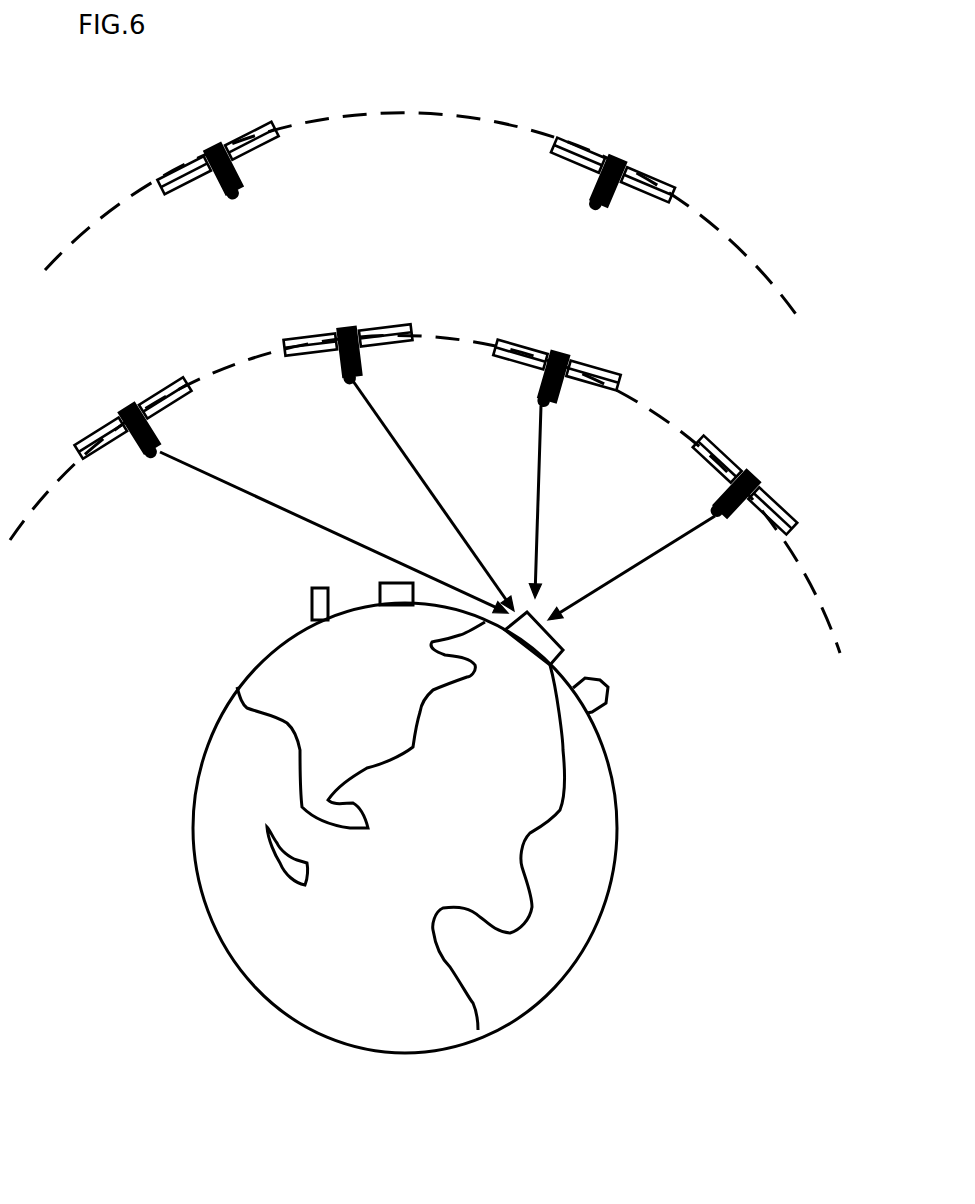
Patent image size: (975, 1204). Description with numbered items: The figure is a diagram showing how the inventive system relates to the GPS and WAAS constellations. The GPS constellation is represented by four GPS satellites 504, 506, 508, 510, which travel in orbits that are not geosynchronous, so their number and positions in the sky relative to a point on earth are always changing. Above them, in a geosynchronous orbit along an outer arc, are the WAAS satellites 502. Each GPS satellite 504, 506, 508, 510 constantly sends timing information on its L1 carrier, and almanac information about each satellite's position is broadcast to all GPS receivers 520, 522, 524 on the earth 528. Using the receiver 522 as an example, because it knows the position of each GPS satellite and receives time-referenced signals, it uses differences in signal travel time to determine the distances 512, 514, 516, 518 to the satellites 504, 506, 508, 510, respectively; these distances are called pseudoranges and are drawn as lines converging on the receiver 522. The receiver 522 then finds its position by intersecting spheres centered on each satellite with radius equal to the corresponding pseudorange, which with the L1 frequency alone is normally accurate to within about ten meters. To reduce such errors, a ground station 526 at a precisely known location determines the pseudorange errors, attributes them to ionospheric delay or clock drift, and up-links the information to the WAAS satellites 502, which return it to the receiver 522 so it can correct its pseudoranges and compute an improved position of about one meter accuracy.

The WAAS satellites 502 is at (206, 138).
The GPS satellite 504 is at (125, 394).
The GPS satellite 506 is at (346, 318).
The GPS satellite 508 is at (566, 352).
The GPS satellite 510 is at (762, 474).
The distance (pseudorange) 512 is at (229, 490).
The distance (pseudorange) 514 is at (398, 450).
The distance (pseudorange) 516 is at (536, 461).
The distance (pseudorange) 518 is at (650, 556).
The GPS receiver 520 is at (616, 697).
The GPS receiver 522 is at (566, 641).
The GPS receiver 524 is at (368, 579).
The ground station 526 is at (309, 603).
The earth 528 is at (226, 698).